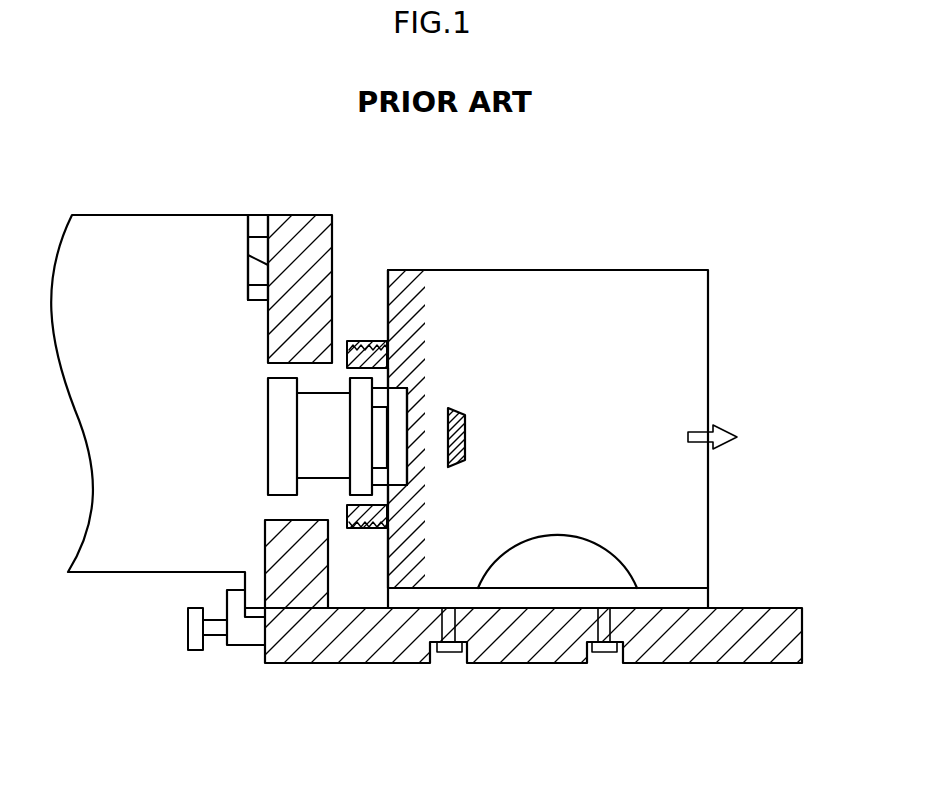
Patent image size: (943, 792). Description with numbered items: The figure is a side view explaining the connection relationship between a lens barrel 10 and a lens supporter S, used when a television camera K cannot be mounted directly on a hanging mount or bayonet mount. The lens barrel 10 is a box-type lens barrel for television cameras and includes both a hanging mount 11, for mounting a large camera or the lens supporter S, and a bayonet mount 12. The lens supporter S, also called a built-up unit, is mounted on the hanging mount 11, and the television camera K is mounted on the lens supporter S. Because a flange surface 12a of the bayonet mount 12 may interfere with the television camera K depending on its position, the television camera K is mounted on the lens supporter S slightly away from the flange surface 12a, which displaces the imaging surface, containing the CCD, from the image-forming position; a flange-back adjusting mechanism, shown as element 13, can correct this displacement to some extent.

The lens barrel 10 is at (170, 157).
The hanging mount 11 is at (258, 233).
The bayonet mount 12 is at (317, 497).
The flange surface 12a is at (391, 350).
The flange / adjusting ring 13 is at (310, 445).
The television camera K is at (723, 326).
The CCD image sensor CCD is at (465, 440).
The lens supporter S is at (723, 654).